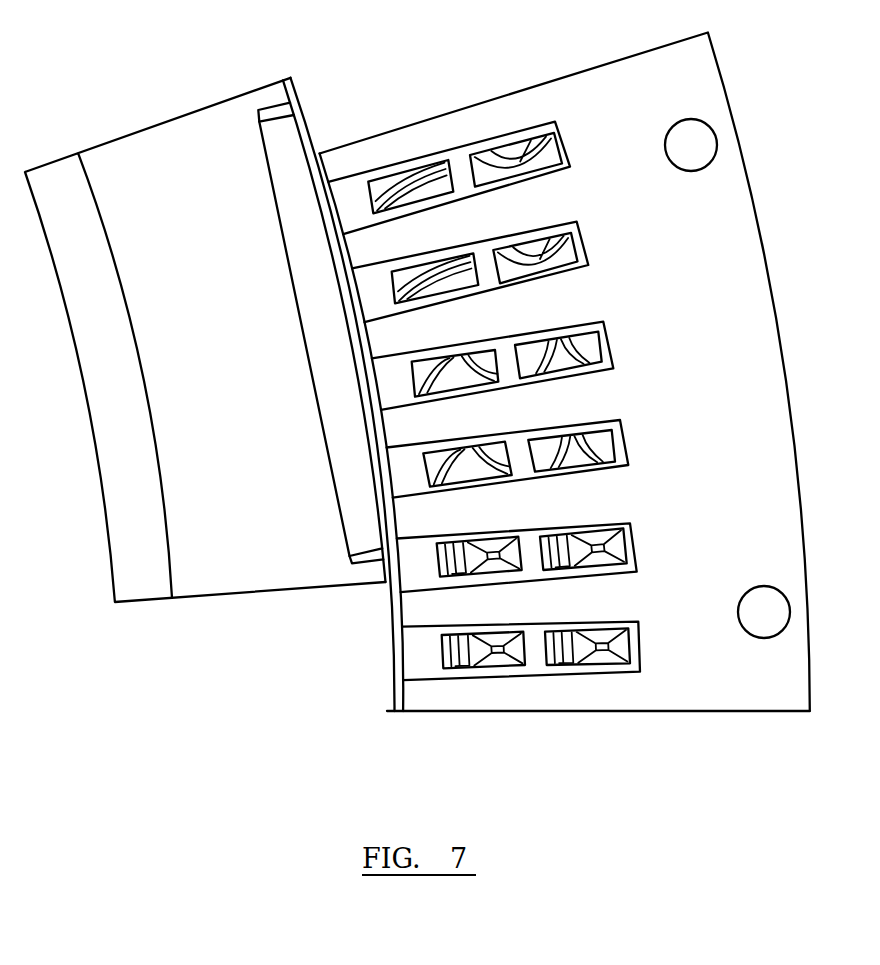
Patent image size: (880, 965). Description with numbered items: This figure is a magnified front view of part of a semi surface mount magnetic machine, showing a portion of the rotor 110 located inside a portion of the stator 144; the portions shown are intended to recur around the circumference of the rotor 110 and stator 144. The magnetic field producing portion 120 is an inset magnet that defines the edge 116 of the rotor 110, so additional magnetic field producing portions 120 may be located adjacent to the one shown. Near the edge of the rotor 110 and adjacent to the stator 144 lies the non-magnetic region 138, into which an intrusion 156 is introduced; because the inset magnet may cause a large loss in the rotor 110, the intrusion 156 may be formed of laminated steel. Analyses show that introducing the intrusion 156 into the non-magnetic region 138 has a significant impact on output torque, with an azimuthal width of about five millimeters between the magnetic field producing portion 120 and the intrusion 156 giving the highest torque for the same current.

The rotor 110 is at (375, 55).
The edge of the rotor 116 is at (350, 252).
The magnetic field producing portion 120 is at (323, 322).
The non-magnetic region 138 is at (281, 114).
The stator 144 is at (718, 303).
The intrusion 156 is at (263, 99).